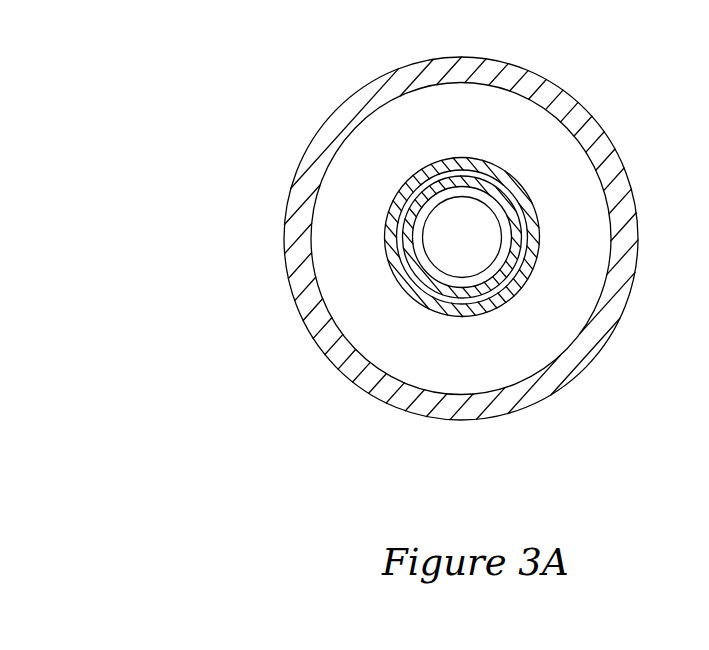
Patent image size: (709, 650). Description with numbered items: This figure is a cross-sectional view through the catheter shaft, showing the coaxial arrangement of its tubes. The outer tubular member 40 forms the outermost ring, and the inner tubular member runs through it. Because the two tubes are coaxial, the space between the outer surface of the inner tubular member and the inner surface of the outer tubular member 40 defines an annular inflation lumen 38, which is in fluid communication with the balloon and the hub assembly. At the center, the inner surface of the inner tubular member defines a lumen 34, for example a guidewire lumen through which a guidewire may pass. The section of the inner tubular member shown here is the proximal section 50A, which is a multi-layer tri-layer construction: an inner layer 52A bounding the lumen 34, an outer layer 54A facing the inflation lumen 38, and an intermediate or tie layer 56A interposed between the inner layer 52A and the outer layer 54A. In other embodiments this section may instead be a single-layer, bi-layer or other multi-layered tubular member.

The outer tubular member 40 is at (403, 82).
The inflation lumen 38 is at (527, 117).
The proximal section of the inner tubular member 50A is at (415, 185).
The outer layer 54A is at (503, 293).
The intermediate or tie layer 56A is at (418, 278).
The inner layer 52A is at (416, 239).
The lumen 34 is at (480, 225).